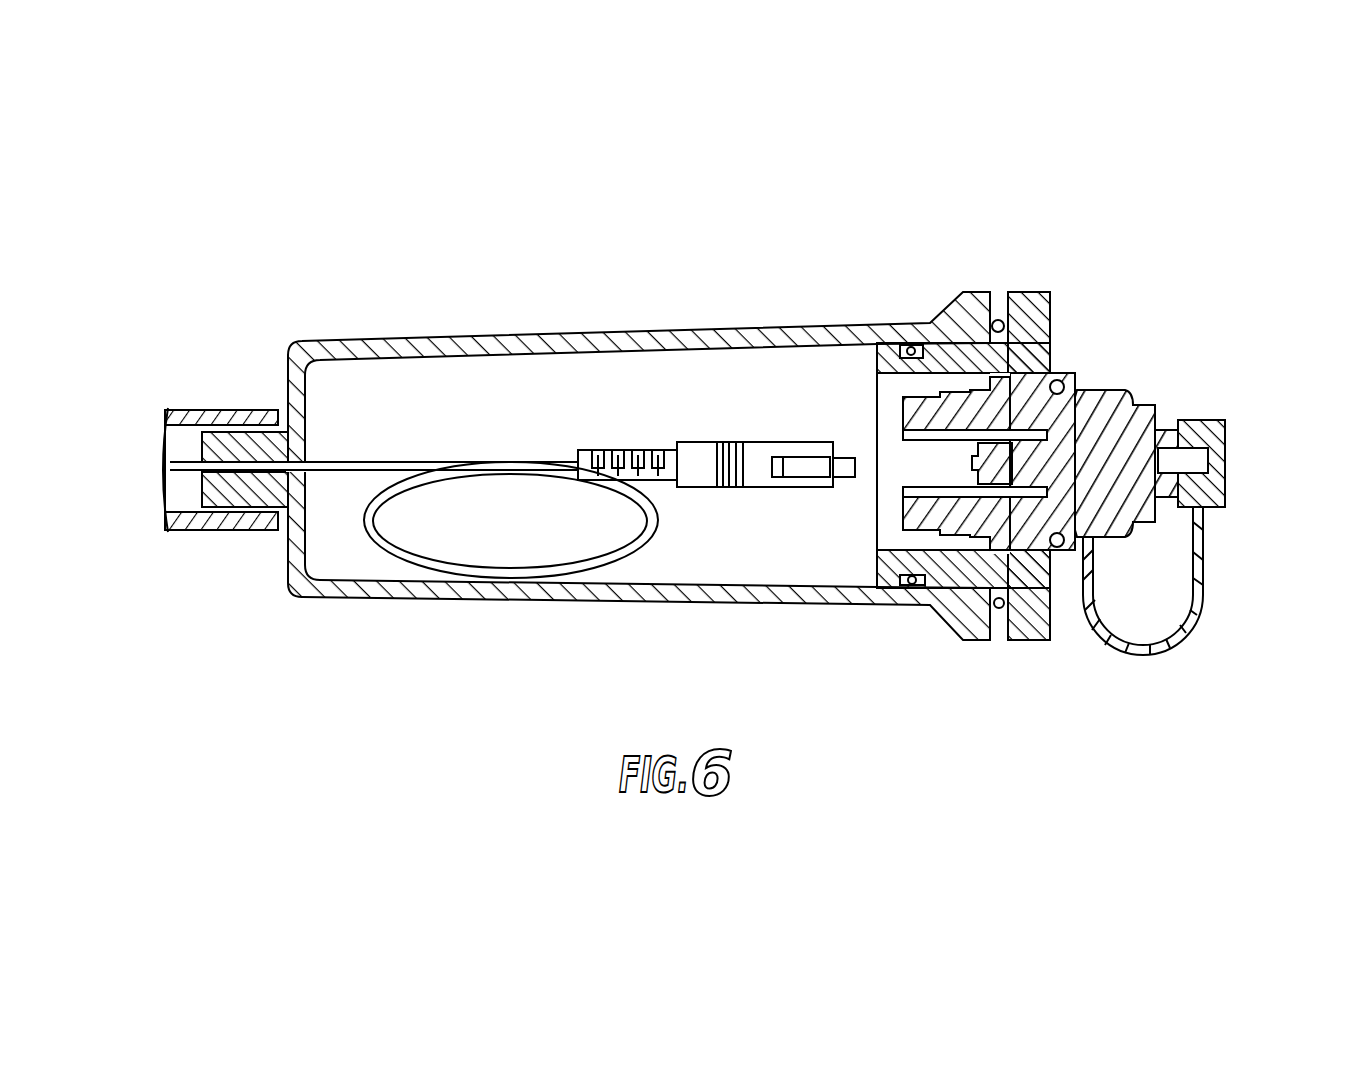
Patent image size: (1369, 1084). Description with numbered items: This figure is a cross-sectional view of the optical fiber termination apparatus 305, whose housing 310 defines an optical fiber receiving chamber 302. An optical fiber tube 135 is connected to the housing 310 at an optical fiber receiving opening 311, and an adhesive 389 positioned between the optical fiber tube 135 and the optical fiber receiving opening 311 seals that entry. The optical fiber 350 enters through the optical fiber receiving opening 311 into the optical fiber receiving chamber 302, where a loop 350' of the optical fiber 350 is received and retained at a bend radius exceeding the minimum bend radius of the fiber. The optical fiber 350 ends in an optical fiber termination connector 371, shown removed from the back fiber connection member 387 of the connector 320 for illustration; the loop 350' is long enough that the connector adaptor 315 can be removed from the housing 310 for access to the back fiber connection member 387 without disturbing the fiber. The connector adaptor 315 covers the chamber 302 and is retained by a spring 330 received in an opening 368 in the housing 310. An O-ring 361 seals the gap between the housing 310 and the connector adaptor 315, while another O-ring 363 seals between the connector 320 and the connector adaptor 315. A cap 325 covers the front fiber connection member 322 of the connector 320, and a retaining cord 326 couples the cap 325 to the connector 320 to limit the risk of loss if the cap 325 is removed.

The optical fiber tube 135 is at (190, 410).
The adhesive 389 is at (243, 432).
The optical fiber receiving opening 311 is at (180, 465).
The optical fiber 350 is at (442, 428).
The loop of the optical fiber 350' is at (617, 433).
The optical fiber receiving chamber 302 is at (405, 568).
The housing 310 is at (487, 333).
The optical fiber termination connector 371 is at (757, 472).
The back fiber connection member 387 is at (905, 462).
The O-ring 361 is at (905, 592).
The opening 368 is at (996, 322).
The spring 330 is at (1003, 333).
The optical fiber termination apparatus 305 is at (1125, 298).
The connector adaptor 315 is at (1050, 348).
The connector 320 is at (1140, 400).
The front fiber connection member 322 is at (1197, 458).
The cap 325 is at (1232, 484).
The retaining cord 326 is at (1207, 602).
The O-ring 363 is at (1064, 548).